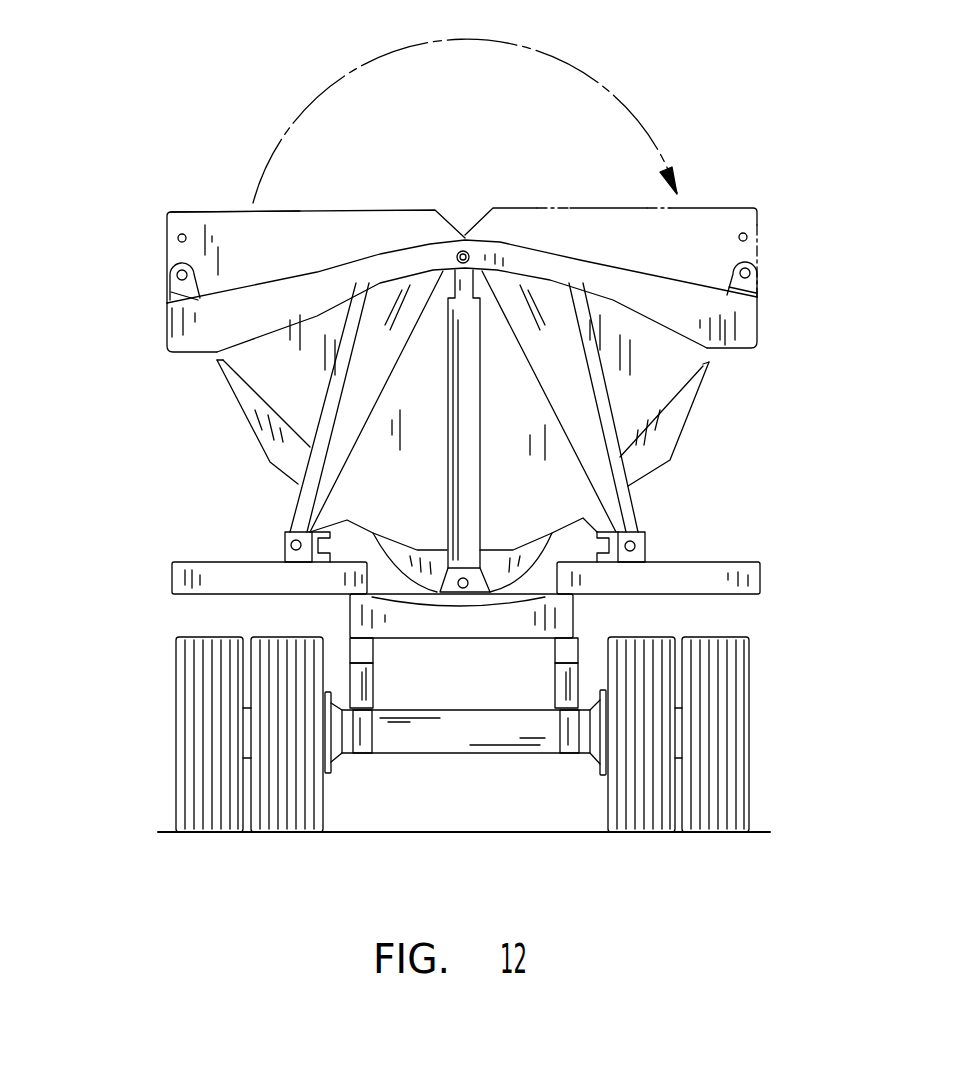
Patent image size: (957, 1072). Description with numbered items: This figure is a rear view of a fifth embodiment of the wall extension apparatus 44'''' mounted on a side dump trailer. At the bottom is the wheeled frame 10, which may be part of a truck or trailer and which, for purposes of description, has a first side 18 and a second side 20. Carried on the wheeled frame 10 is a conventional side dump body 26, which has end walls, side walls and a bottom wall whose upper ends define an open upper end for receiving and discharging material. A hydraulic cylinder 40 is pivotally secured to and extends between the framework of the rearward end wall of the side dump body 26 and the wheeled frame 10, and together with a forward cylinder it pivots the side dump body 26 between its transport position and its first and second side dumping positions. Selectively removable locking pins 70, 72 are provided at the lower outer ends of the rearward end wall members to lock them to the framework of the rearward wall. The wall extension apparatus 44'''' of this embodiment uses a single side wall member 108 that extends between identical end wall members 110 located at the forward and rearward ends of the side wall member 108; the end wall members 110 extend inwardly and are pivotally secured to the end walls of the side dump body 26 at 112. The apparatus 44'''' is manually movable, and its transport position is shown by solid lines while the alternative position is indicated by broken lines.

The wheeled frame 10 is at (170, 626).
The first side 18 is at (162, 528).
The second side 20 is at (773, 557).
The side dump body 26 is at (212, 421).
The hydraulic cylinder 40 is at (463, 438).
The wall extension apparatus 44'''' is at (495, 225).
The locking pin 70 is at (172, 288).
The locking pin 72 is at (758, 272).
The side wall member 108 is at (163, 258).
The end wall member 110 is at (315, 250).
The pivot 112 is at (464, 250).